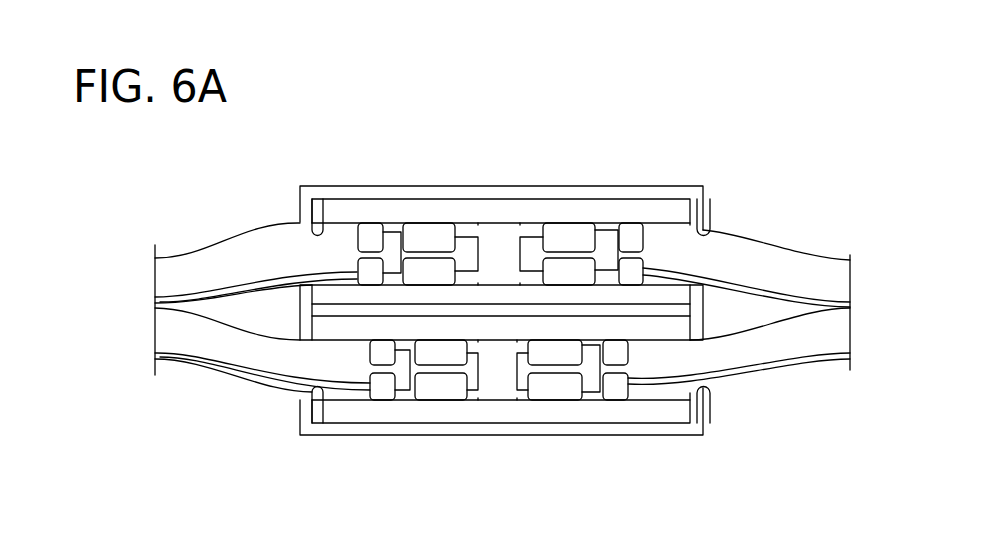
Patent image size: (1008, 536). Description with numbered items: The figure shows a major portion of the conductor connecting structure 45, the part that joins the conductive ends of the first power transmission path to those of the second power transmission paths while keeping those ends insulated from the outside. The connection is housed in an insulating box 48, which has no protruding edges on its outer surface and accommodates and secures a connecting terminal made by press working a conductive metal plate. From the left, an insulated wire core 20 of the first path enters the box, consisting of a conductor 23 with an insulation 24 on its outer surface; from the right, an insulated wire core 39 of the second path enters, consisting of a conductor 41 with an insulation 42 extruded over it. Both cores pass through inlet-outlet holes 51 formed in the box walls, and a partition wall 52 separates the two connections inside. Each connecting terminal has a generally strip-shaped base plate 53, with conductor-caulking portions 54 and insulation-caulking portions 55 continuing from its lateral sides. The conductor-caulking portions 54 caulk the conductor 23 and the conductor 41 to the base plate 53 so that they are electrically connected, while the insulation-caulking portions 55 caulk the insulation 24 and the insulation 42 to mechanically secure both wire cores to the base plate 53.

The insulated wire core 20 is at (228, 243).
The conductor 23 is at (466, 250).
The insulation 24 is at (268, 252).
The insulated wire core 39 is at (841, 254).
The conductor 41 is at (527, 246).
The insulation 42 is at (767, 252).
The conductor connecting structure 45 is at (501, 303).
The insulating box 48 is at (677, 432).
The inlet-outlet hole 51 is at (318, 232).
The partition wall 52 is at (668, 303).
The base plate 53 is at (494, 246).
The conductor-caulking portion 54 is at (427, 240).
The insulation-caulking portion 55 is at (368, 232).